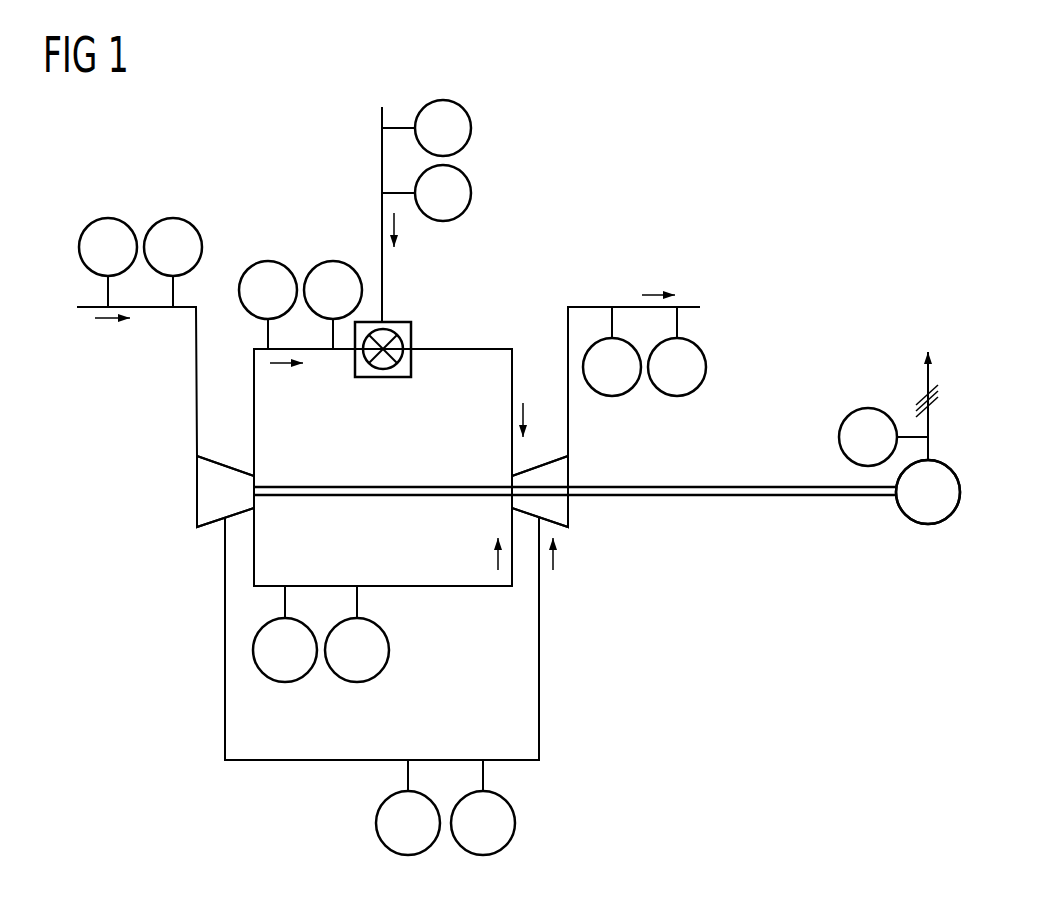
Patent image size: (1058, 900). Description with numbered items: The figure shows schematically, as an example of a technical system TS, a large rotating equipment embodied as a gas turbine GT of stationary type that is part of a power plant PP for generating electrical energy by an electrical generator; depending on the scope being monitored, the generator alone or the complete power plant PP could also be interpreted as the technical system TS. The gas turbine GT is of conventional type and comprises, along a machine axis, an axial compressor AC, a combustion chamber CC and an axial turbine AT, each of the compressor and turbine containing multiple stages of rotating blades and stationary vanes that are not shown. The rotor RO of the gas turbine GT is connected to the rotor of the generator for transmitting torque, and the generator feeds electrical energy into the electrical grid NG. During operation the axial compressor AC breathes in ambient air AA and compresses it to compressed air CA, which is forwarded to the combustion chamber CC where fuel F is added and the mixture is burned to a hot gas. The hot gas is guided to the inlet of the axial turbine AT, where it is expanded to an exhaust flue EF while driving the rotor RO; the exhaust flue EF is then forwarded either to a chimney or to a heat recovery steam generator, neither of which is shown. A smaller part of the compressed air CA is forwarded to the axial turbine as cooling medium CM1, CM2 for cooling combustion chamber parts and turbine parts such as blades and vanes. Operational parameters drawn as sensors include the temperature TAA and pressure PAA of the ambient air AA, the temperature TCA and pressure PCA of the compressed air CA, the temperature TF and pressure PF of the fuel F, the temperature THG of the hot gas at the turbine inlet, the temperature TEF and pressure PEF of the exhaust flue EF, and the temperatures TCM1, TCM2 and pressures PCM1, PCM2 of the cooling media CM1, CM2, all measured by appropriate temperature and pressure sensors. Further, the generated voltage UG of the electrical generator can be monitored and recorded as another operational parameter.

The technical system TS is at (575, 140).
The gas turbine GT is at (382, 491).
The ambient air AA is at (121, 373).
The temperature of ambient air TAA is at (108, 262).
The pressure of ambient air PAA is at (173, 262).
The axial compressor AC is at (228, 466).
The compressed air CA is at (254, 433).
The temperature of compressed air TCA is at (268, 305).
The pressure of compressed air PCA is at (333, 305).
The fuel F is at (385, 193).
The temperature of the fuel TF is at (426, 128).
The pressure of the fuel PF is at (426, 193).
The combustion chamber CC is at (413, 332).
The temperature of the hot gas THG is at (511, 408).
The axial turbine AT is at (538, 466).
The exhaust flue EF is at (652, 373).
The temperature of the exhaust flue TEF is at (612, 351).
The pressure of the exhaust flue PEF is at (677, 351).
The cooling medium CM1 is at (320, 586).
The temperature of the cooling medium TCM1 is at (285, 634).
The pressure of the cooling medium PCM1 is at (357, 634).
The cooling medium CM2 is at (447, 760).
The temperature of the cooling medium TCM2 is at (408, 807).
The pressure of the cooling medium PCM2 is at (483, 807).
The rotor RO is at (763, 500).
The generator G is at (928, 492).
The generated voltage of the electrical generator UG is at (883, 437).
The electrical grid NG is at (929, 389).
The power plant PP is at (918, 258).